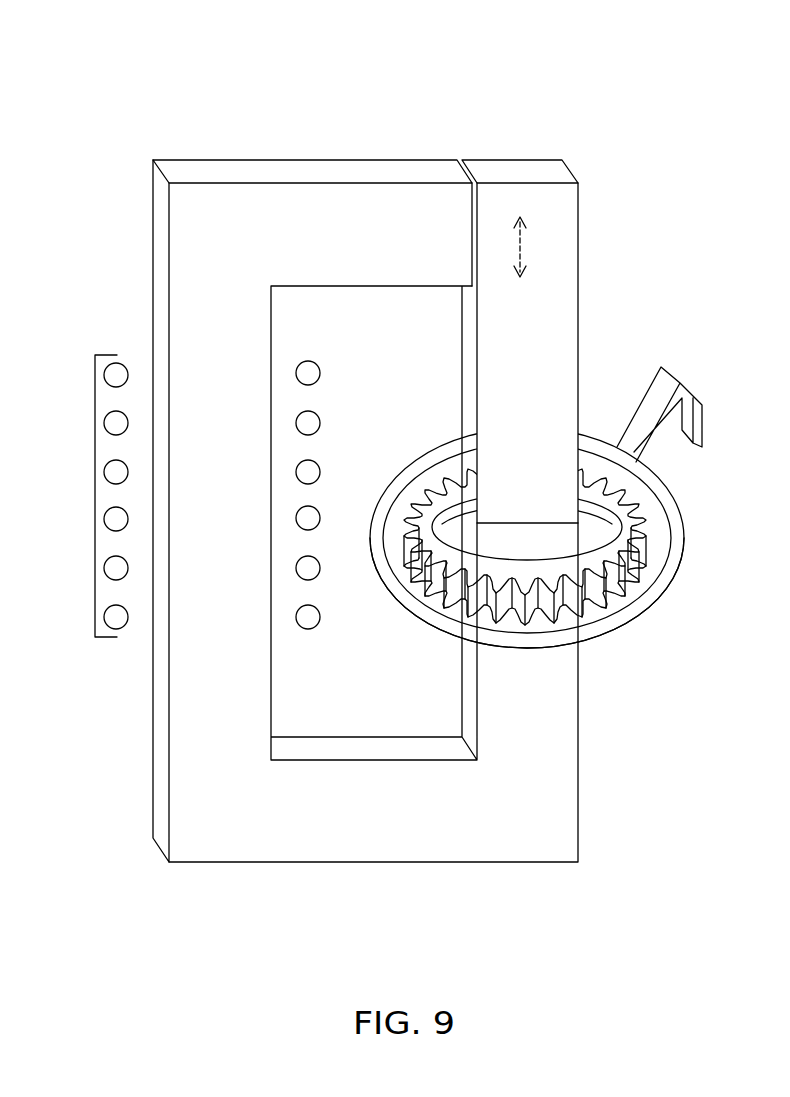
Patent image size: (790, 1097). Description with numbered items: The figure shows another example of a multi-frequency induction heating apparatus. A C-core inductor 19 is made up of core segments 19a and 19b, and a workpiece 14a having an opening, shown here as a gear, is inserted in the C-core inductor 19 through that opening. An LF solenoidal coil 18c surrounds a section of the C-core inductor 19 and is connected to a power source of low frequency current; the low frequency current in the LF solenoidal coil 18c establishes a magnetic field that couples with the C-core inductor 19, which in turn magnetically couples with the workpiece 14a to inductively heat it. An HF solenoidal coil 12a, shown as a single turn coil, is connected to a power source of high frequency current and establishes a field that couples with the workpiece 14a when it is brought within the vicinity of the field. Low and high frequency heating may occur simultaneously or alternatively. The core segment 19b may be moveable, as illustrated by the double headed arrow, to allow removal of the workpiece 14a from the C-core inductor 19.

The C-core inductor 19 is at (413, 103).
The core segment 19a is at (260, 825).
The core segment 19b is at (548, 380).
The LF solenoidal coil 18c is at (95, 495).
The workpiece 14a is at (645, 522).
The HF solenoidal coil 12a is at (637, 627).